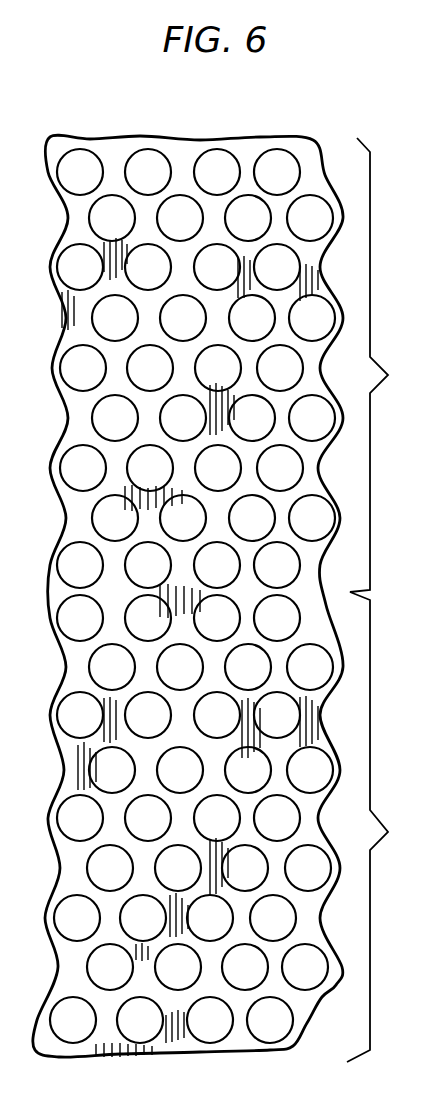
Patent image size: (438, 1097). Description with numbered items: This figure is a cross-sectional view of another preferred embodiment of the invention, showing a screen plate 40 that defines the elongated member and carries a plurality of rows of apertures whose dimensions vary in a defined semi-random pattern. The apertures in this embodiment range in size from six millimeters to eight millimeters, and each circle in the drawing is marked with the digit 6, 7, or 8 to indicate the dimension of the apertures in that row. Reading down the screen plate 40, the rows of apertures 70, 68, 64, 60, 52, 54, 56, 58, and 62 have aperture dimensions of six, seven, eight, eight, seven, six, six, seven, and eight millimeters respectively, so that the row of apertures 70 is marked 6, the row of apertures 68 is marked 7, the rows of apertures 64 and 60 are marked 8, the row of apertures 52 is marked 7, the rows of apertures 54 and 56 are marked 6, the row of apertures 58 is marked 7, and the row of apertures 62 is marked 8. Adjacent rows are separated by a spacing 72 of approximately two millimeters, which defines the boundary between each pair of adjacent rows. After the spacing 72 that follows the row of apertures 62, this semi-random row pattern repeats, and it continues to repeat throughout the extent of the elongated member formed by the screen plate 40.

The screen plate 40 is at (122, 120).
The row of apertures 70 is at (322, 163).
The row of apertures 68 is at (348, 218).
The row of apertures 64 is at (337, 268).
The row of apertures 60 is at (350, 315).
The row of apertures 52 is at (333, 367).
The row of apertures 54 is at (353, 418).
The row of apertures 56 is at (335, 462).
The row of apertures 58 is at (350, 507).
The row of apertures 62 is at (333, 563).
The spacing 72 is at (58, 597).
The tuft type 6 is at (178, 618).
The tuft type 7 is at (211, 667).
The tuft type 8 is at (178, 715).